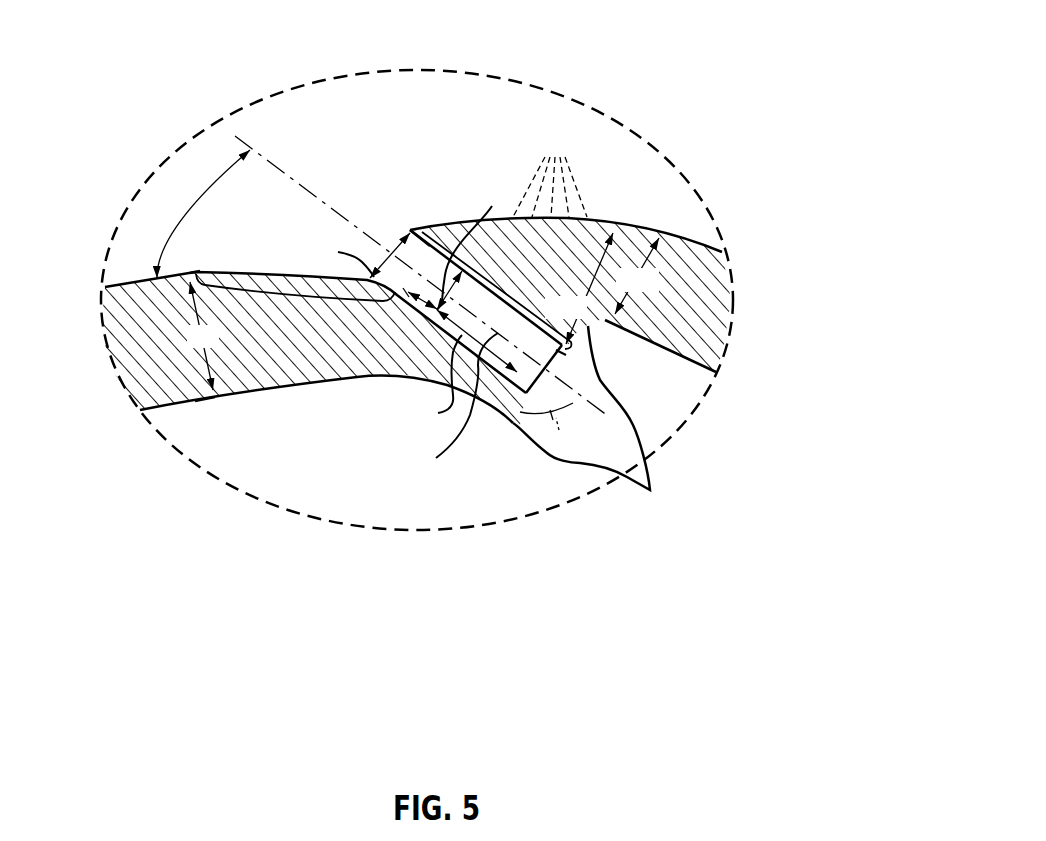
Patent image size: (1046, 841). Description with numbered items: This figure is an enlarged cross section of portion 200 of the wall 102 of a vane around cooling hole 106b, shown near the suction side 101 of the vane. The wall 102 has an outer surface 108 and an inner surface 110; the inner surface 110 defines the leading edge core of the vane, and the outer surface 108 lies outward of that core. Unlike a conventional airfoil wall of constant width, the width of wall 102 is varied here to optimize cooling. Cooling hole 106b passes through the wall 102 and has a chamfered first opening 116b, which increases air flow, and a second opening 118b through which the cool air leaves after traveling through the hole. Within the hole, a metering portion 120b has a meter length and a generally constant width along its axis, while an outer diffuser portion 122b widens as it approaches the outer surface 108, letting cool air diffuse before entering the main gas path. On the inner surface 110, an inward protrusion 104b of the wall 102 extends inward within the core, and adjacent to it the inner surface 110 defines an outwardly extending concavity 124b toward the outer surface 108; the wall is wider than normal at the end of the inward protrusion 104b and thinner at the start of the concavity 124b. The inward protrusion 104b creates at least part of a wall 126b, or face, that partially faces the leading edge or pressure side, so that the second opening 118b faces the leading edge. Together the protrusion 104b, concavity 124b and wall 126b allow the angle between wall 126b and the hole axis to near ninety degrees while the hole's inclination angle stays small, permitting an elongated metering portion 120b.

The portion of wall 200 is at (640, 88).
The suction side 101 is at (550, 173).
The wall 102 is at (120, 333).
The inward protrusion 104b is at (481, 400).
The cooling hole 106b is at (425, 248).
The outer surface 108 is at (196, 272).
The inner surface 110 is at (204, 400).
The first opening 116b is at (281, 244).
The second opening 118b is at (563, 350).
The metering portion 120b is at (497, 288).
The outer diffuser portion 122b is at (291, 299).
The outwardly extending concavity 124b is at (562, 345).
The wall 126b is at (592, 425).